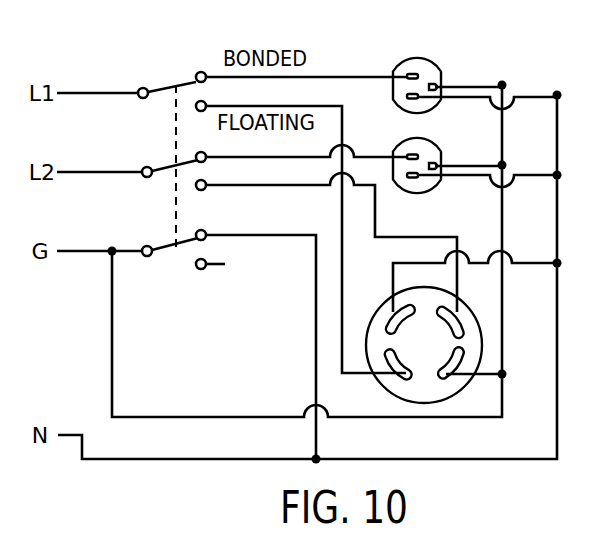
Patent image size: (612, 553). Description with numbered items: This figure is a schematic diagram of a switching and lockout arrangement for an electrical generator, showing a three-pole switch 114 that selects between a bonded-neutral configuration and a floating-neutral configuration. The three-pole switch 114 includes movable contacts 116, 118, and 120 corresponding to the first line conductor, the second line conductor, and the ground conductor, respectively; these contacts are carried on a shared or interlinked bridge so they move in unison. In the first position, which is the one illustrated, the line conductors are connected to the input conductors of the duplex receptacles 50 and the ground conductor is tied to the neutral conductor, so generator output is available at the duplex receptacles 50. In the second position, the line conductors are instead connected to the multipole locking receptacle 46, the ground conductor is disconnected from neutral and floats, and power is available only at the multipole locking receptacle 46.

The three-pole switch 114 is at (152, 65).
The movable contact 116 is at (186, 82).
The movable contact 118 is at (165, 167).
The movable contact 120 is at (165, 246).
The duplex receptacles 50 is at (441, 138).
The multipole locking receptacle 46 is at (424, 353).